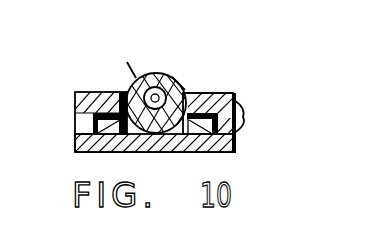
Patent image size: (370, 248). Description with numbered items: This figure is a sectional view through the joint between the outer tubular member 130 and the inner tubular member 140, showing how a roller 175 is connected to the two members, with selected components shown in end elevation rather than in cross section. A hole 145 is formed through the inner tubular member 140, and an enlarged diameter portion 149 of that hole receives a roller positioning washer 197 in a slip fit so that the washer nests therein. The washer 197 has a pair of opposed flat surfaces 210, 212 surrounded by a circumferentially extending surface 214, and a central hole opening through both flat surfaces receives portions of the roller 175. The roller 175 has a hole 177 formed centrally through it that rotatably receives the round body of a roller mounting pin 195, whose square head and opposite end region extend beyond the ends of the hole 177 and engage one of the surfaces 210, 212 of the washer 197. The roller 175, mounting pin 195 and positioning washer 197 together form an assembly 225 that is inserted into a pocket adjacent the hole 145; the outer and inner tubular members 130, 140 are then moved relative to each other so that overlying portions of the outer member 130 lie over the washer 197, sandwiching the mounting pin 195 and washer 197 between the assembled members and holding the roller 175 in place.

The outer tubular member 130 is at (236, 146).
The inner tubular member 140 is at (241, 100).
The hole 145 is at (119, 88).
The enlarged diameter portion 149 is at (104, 153).
The roller 175 is at (152, 76).
The hole 177 is at (178, 75).
The roller mounting pin 195 is at (188, 77).
The roller positioning washer 197 is at (245, 117).
The flat surface 210 is at (215, 92).
The flat surface 212 is at (208, 153).
The circumferentially extending surface 214 is at (74, 108).
The assembly 225 is at (127, 62).